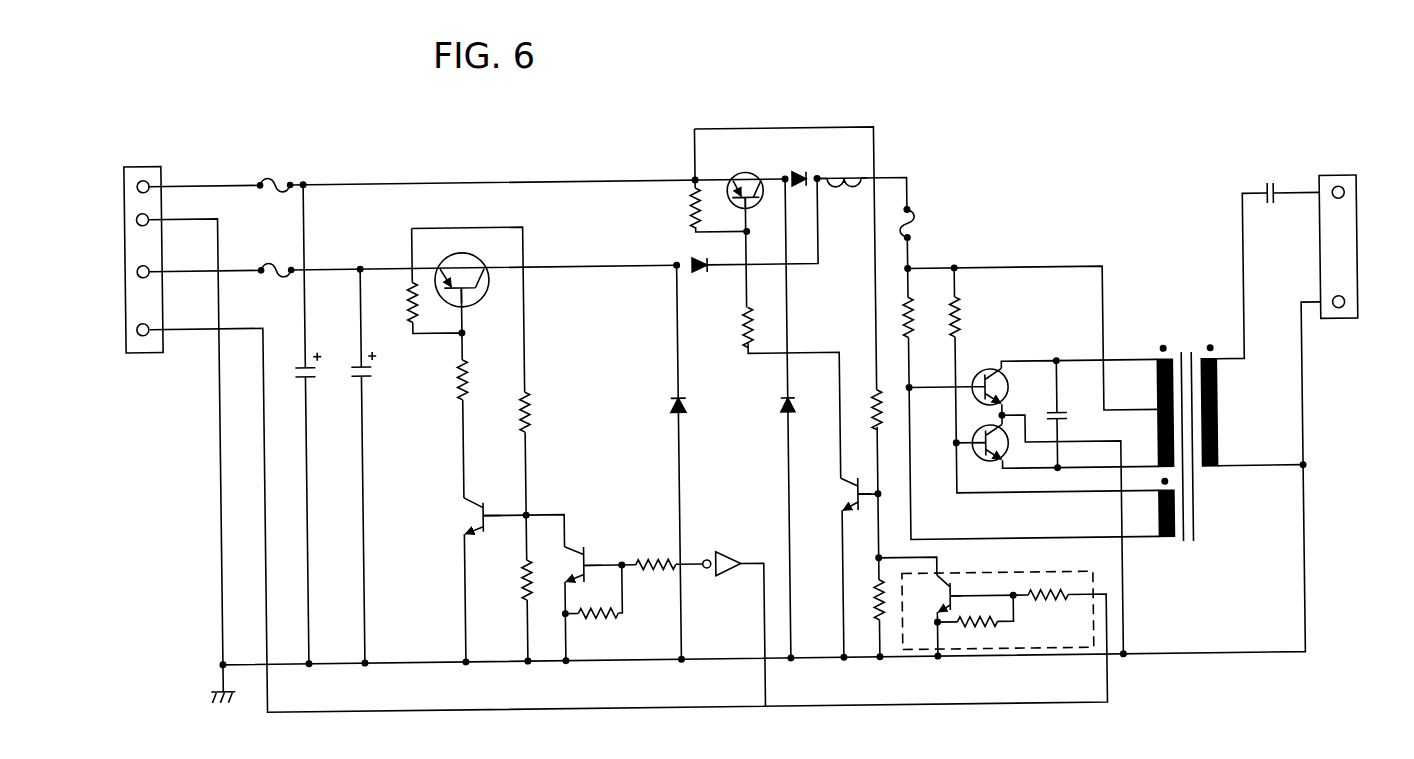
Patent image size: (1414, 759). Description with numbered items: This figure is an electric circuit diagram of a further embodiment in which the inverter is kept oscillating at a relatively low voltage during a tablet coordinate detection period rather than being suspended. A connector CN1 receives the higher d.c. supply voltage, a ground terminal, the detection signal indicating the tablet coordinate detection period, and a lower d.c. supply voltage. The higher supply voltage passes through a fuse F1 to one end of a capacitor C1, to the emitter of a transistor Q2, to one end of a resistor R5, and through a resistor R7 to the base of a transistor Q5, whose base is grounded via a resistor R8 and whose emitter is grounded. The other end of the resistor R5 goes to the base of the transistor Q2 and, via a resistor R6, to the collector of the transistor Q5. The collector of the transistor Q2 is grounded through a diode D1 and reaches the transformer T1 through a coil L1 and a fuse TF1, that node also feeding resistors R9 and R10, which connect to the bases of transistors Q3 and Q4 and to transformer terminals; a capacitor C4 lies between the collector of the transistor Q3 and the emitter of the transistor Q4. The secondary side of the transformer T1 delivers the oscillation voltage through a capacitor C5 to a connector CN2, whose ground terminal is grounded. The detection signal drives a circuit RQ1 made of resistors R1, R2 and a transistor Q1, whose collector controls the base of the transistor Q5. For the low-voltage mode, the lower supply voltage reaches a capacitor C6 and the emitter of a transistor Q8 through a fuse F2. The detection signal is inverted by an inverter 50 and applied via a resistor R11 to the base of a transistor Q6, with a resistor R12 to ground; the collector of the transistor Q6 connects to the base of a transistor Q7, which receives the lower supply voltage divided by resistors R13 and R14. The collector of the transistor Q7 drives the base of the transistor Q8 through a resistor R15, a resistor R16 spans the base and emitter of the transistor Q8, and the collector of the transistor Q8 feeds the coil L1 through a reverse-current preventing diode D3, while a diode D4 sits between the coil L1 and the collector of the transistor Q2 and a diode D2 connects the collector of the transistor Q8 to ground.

The connector CN1 is at (115, 246).
The connector CN2 is at (1358, 230).
The fuse F1 is at (274, 171).
The fuse F2 is at (276, 257).
The capacitor C1 is at (298, 377).
The capacitor C4 is at (1065, 404).
The capacitor C5 is at (1262, 179).
The capacitor C6 is at (353, 377).
The resistor R1 is at (1048, 608).
The resistor R2 is at (987, 635).
The resistor R5 is at (675, 208).
The resistor R6 is at (733, 327).
The resistor R7 is at (864, 405).
The resistor R8 is at (866, 597).
The resistor R9 is at (922, 315).
The resistor R10 is at (973, 316).
The resistor R11 is at (653, 551).
The resistor R12 is at (598, 627).
The resistor R13 is at (546, 412).
The resistor R14 is at (506, 580).
The resistor R15 is at (441, 380).
The resistor R16 is at (392, 303).
The diode D1 is at (803, 407).
The diode D2 is at (697, 408).
The diode D3 is at (702, 282).
The diode D4 is at (793, 167).
The coil L1 is at (842, 167).
The fuse TF1 is at (928, 225).
The transistor Q1 is at (935, 594).
The transistor Q2 is at (744, 178).
The transistor Q3 is at (982, 375).
The transistor Q4 is at (985, 457).
The transistor Q5 is at (839, 494).
The transistor Q6 is at (566, 562).
The transistor Q7 is at (465, 515).
The transistor Q8 is at (466, 269).
The circuit RQ1 is at (998, 597).
The inverter 50 is at (725, 550).
The transformer T1 is at (1188, 443).